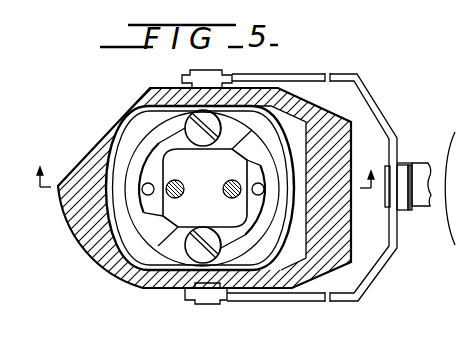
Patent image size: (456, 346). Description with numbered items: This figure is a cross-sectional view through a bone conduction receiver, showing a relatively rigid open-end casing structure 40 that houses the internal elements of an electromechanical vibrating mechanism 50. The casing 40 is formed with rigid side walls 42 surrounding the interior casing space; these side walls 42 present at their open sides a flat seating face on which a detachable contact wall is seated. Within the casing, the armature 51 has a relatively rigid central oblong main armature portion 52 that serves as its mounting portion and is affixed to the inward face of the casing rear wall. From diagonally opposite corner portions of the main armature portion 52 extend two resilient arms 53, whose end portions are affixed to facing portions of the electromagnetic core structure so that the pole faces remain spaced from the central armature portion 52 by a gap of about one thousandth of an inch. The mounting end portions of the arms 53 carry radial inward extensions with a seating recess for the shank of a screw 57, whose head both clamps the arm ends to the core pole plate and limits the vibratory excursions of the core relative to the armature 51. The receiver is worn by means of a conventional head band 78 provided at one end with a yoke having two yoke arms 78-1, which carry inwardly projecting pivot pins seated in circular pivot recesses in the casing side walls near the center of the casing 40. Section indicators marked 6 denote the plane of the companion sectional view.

The casing structure 40 is at (100, 110).
The side walls 42 is at (164, 98).
The electromechanical vibrating mechanism 50 is at (283, 249).
The armature 51 is at (228, 150).
The main armature portion 52 is at (217, 187).
The resilient arms 53 is at (137, 146).
The screw 57 is at (194, 141).
The head band 78 is at (430, 162).
The yoke arms 78-1 is at (314, 64).
The section line 6- 6 is at (205, 168).